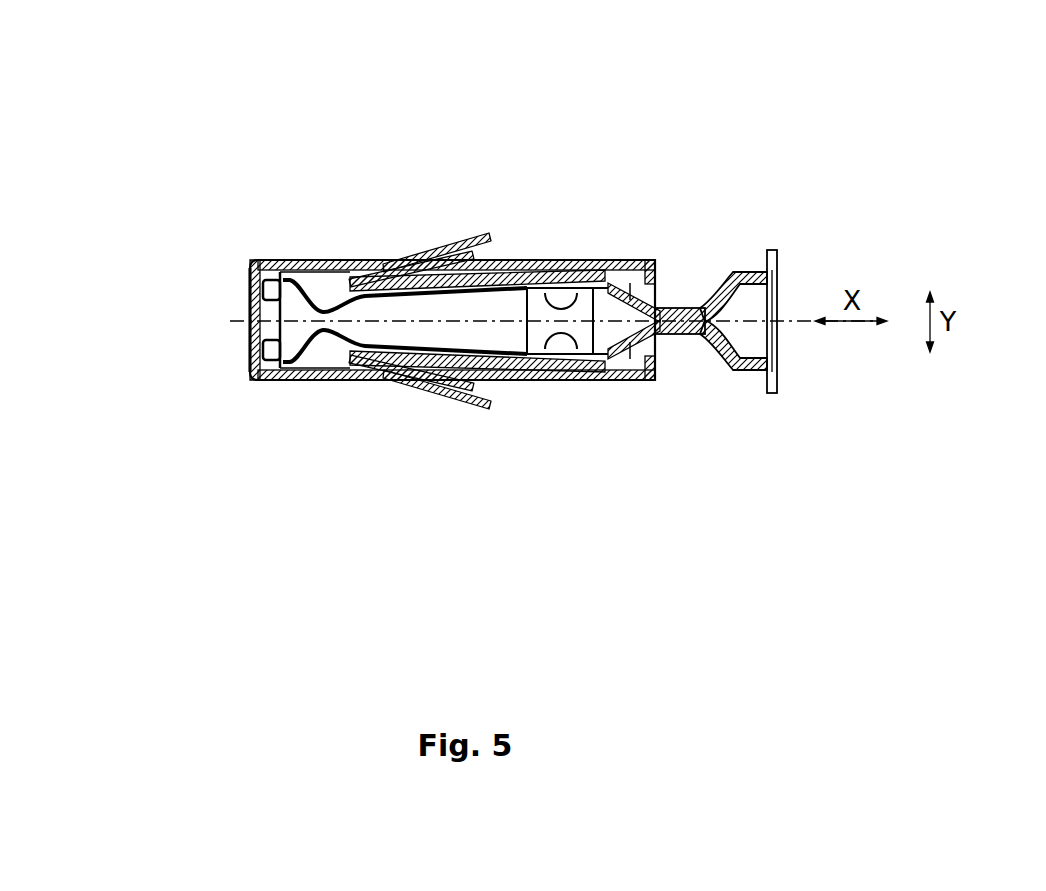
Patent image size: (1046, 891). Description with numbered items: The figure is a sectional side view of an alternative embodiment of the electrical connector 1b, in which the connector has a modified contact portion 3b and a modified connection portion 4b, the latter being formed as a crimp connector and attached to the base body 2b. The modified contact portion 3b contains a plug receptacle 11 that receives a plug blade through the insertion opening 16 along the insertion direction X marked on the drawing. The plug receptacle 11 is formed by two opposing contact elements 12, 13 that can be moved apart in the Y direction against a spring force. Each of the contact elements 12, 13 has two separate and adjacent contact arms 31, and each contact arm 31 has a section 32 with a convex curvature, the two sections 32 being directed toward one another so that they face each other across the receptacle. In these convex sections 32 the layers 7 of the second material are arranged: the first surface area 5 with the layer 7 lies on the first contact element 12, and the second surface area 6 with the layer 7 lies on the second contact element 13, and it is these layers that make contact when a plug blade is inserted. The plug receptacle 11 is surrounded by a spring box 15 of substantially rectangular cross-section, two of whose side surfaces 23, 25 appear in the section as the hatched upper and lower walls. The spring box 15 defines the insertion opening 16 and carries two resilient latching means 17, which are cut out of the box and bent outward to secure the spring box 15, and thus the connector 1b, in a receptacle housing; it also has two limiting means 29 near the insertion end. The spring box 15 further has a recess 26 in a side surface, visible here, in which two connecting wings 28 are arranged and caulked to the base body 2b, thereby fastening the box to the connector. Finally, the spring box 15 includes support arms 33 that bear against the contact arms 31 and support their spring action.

The electrical connector 1b is at (627, 190).
The base body 2b is at (683, 335).
The modified contact portion 3b is at (309, 246).
The modified connection portion 4b is at (782, 235).
The first surface area 5 is at (318, 298).
The second surface area 6 is at (310, 350).
The layer of the second material 7 is at (405, 319).
The plug receptacle 11 is at (376, 332).
The first contact element 12 is at (368, 292).
The second contact element 13 is at (382, 352).
The spring box 15 is at (557, 262).
The insertion opening 16 is at (222, 321).
The latching means 17 is at (450, 243).
The side surface 23 is at (601, 248).
The side surface 25 is at (590, 391).
The recess 26 is at (537, 346).
The connecting wings 28 is at (531, 293).
The limiting means 29 is at (255, 285).
The contact arms 31 is at (477, 321).
The section with convex curvature 32 is at (282, 262).
The support arms 33 is at (402, 262).